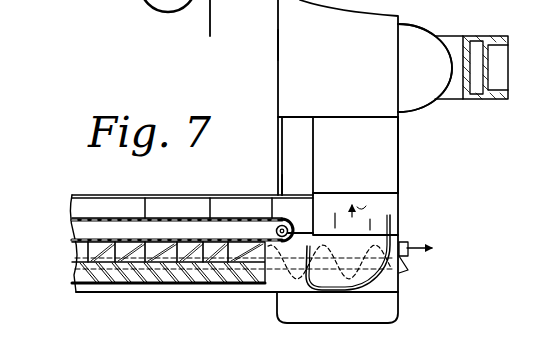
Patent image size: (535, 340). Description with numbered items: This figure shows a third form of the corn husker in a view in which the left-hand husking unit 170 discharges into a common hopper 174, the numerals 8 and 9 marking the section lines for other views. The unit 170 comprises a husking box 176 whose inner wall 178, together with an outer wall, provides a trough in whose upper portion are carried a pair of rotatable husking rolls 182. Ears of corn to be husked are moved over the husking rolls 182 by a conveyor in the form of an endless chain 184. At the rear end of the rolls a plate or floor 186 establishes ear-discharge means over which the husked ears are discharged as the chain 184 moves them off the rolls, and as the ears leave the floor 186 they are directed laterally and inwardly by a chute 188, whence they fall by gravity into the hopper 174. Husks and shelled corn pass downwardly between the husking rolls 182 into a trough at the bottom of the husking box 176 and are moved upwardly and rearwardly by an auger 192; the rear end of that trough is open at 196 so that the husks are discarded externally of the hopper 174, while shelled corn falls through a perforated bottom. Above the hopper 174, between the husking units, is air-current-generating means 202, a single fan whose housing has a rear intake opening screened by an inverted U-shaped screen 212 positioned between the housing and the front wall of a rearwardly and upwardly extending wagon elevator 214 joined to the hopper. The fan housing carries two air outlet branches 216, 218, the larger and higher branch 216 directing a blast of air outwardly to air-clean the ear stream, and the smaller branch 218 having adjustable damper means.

The section line 8 is at (29, 248).
The section line 9 is at (184, 28).
The left-hand husking unit 170 is at (64, 200).
The hopper 174 is at (400, 145).
The husking box 176 is at (167, 194).
The inner wall 178 is at (100, 195).
The husking rolls 182 is at (82, 270).
The endless chain 184 is at (225, 218).
The plate or floor 186 is at (295, 219).
The chute 188 is at (390, 208).
The auger 192 is at (157, 297).
The open rear end of trough 196 is at (402, 248).
The air-current-generating means 202 is at (277, 48).
The inverted U-shaped screen 212 is at (415, 32).
The wagon elevator 214 is at (493, 36).
The air outlet branch 216 is at (385, 180).
The air outlet branch 218 is at (286, 183).